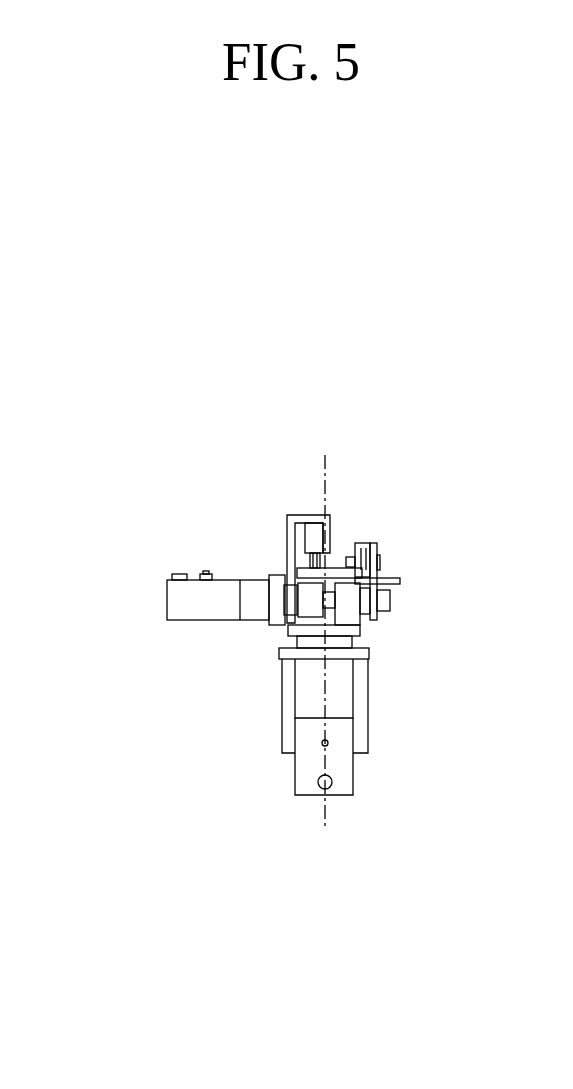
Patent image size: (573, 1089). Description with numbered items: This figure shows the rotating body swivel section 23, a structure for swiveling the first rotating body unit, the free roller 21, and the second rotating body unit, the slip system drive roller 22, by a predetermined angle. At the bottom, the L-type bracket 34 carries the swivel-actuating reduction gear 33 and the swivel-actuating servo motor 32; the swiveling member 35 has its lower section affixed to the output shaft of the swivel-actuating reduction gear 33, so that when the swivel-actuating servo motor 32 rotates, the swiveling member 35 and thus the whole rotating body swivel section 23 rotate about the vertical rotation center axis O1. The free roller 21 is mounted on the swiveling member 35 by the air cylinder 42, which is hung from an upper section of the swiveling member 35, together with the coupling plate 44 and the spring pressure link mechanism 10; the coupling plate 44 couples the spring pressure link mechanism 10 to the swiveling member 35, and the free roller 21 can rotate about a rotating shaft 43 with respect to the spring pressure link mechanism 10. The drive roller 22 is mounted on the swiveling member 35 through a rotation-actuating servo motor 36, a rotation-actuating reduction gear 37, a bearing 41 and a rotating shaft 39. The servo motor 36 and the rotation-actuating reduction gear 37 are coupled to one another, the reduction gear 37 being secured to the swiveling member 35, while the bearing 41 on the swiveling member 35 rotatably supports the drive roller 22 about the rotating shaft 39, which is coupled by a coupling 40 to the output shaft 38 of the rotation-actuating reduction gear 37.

The rotating body swivel section 23 is at (200, 452).
The rotation center axis O1 is at (327, 643).
The air cylinder 42 is at (320, 527).
The coupling 40 is at (305, 584).
The coupling plate 44 is at (340, 583).
The output shaft 38 is at (285, 590).
The rotation-actuating reduction gear 37 is at (240, 579).
The rotation-actuating servo motor 36 is at (167, 598).
The swiveling member 35 is at (288, 637).
The bearing 41 is at (362, 620).
The L-type bracket 34 is at (368, 658).
The swivel-actuating reduction gear 33 is at (295, 705).
The swivel-actuating servo motor 32 is at (296, 795).
The spring pressure link mechanism 10 is at (360, 546).
The free roller 21 is at (385, 580).
The rotating shaft 43 is at (379, 555).
The slip system drive roller 22 is at (379, 619).
The rotating shaft 39 is at (390, 601).